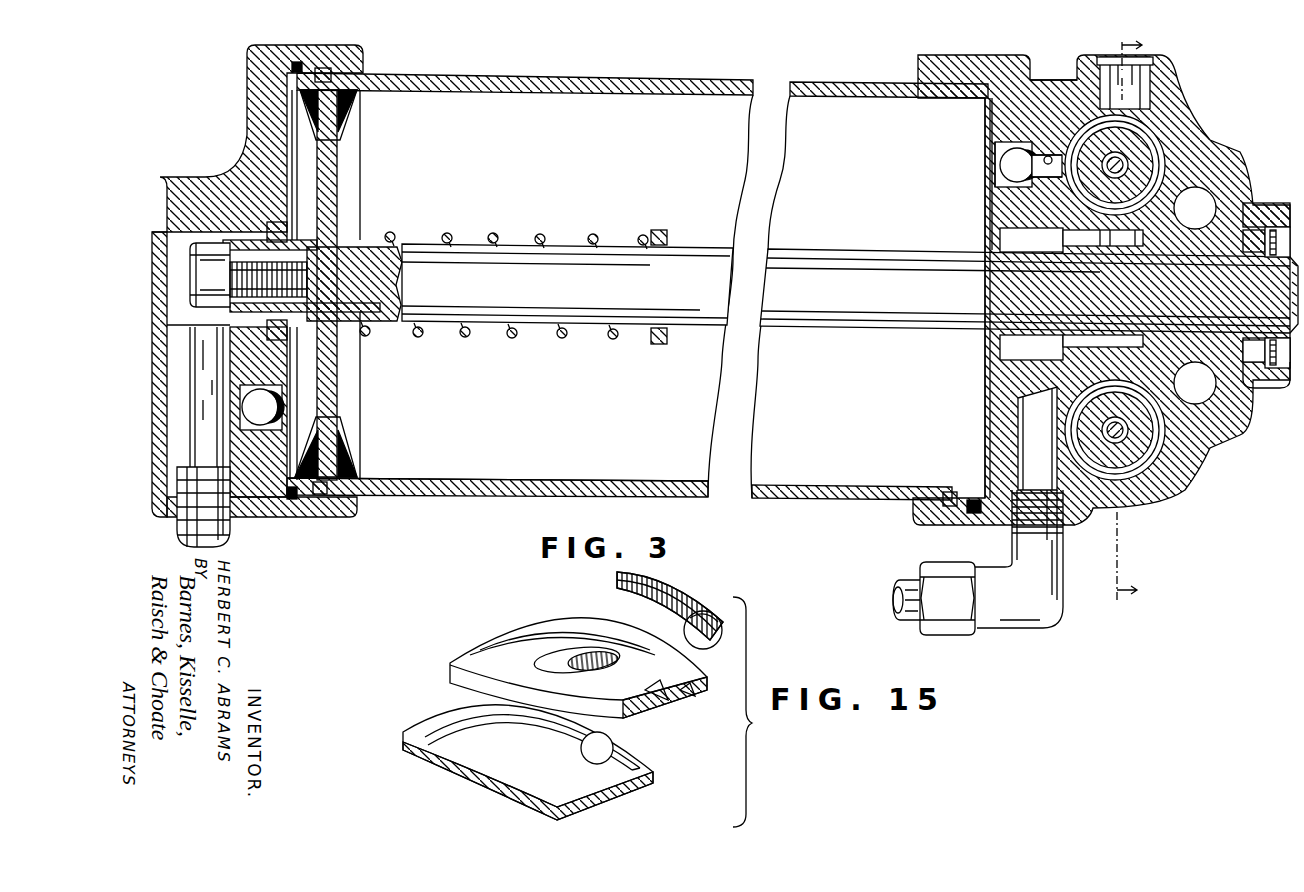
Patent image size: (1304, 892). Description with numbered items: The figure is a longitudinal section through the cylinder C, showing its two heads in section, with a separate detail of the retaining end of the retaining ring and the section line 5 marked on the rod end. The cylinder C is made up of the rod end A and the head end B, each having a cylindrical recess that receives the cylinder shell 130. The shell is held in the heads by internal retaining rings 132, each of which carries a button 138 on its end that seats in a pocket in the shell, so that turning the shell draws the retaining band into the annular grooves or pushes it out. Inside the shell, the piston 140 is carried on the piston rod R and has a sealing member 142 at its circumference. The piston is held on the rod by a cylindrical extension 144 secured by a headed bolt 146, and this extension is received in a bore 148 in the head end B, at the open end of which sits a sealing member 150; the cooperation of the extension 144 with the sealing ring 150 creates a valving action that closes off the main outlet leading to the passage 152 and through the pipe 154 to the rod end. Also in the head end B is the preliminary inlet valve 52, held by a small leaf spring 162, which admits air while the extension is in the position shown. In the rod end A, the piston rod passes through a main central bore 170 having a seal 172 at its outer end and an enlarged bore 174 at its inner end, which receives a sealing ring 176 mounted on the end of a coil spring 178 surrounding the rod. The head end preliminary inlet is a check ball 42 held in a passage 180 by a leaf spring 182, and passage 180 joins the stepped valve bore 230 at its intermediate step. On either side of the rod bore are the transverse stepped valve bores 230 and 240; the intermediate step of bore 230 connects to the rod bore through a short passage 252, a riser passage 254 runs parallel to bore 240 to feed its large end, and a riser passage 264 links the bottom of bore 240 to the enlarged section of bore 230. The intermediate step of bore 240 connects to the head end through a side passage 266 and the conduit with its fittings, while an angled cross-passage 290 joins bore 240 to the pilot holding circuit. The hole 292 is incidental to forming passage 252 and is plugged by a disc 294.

In FIG. 3, the cylinder C is at (616, 80).
In FIG. 15, the cylinder C is at (440, 737).
In FIG. 3, the piston rod R is at (562, 262).
In FIG. 3, the head end B is at (280, 517).
In FIG. 3, the rod end A is at (1180, 125).
In FIG. 15, the rod end A is at (573, 637).
In FIG. 3, the section line 5 is at (1140, 319).
In FIG. 3, the check ball 42 is at (1010, 160).
In FIG. 3, the preliminary inlet valve 52 is at (250, 403).
In FIG. 3, the cylinder shell 130 is at (507, 486).
In FIG. 3, the internal retaining ring 132 is at (322, 497).
In FIG. 15, the internal retaining ring 132 is at (630, 592).
In FIG. 15, the button 138 is at (718, 618).
In FIG. 3, the piston 140 is at (320, 403).
In FIG. 3, the sealing member 142 is at (352, 100).
In FIG. 3, the cylindrical extension 144 is at (217, 240).
In FIG. 3, the headed bolt 146 is at (300, 277).
In FIG. 3, the bore 148 is at (160, 232).
In FIG. 3, the sealing member 150 is at (285, 332).
In FIG. 3, the passage 152 is at (205, 398).
In FIG. 3, the pipe 154 is at (222, 543).
In FIG. 3, the leaf spring 162 is at (300, 420).
In FIG. 3, the main central bore 170 is at (1240, 240).
In FIG. 3, the seal 172 is at (1282, 368).
In FIG. 3, the enlarged bore 174 is at (1000, 233).
In FIG. 3, the sealing ring 176 is at (663, 346).
In FIG. 3, the coil spring 178 is at (558, 340).
In FIG. 3, the passage 180 is at (1050, 156).
In FIG. 3, the leaf spring 182 is at (995, 170).
In FIG. 3, the stepped valve bore 230 is at (1170, 140).
In FIG. 3, the stepped valve bore 240 is at (1185, 476).
In FIG. 3, the short passage 252 is at (1118, 242).
In FIG. 3, the riser passage 254 is at (1212, 394).
In FIG. 3, the riser passage 264 is at (1212, 219).
In FIG. 3, the side passage 266 is at (1057, 476).
In FIG. 3, the angled cross-passage 290 is at (1160, 358).
In FIG. 3, the hole 292 is at (1140, 90).
In FIG. 3, the disc 294 is at (1053, 60).